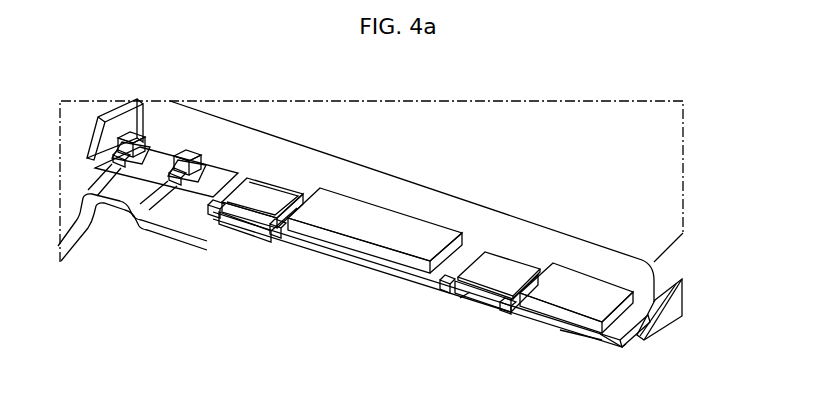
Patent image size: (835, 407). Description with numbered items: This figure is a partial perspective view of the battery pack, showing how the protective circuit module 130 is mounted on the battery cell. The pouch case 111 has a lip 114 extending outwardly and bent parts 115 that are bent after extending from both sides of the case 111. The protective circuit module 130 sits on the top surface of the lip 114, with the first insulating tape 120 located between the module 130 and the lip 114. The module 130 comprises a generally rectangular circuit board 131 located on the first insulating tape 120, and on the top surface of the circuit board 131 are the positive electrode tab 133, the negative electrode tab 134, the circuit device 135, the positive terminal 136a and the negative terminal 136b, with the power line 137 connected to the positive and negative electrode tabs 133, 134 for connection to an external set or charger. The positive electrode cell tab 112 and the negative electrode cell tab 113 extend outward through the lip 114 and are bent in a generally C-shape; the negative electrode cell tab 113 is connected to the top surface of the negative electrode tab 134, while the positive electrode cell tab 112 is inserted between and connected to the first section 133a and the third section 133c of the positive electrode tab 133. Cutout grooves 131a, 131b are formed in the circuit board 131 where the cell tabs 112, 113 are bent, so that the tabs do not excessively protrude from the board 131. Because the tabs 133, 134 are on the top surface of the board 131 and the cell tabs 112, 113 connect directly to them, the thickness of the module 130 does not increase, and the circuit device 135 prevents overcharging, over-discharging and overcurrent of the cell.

The pouch case 111 is at (370, 113).
The positive electrode cell tab 112 is at (482, 300).
The negative electrode cell tab 113 is at (243, 207).
The lip 114 is at (650, 343).
The bent parts 115 is at (108, 121).
The first insulating tape 120 is at (616, 352).
The protective circuit module 130 is at (332, 254).
The circuit board 131 is at (590, 338).
The cutout groove 131a is at (503, 310).
The cutout groove 131b is at (273, 238).
The positive electrode tab 133 is at (500, 281).
The first section 133a is at (443, 283).
The third section 133c is at (462, 300).
The negative electrode tab 134 is at (298, 194).
The circuit device 135 is at (378, 233).
The positive terminal 136a is at (201, 178).
The negative terminal 136b is at (145, 140).
The power line 137 is at (82, 232).